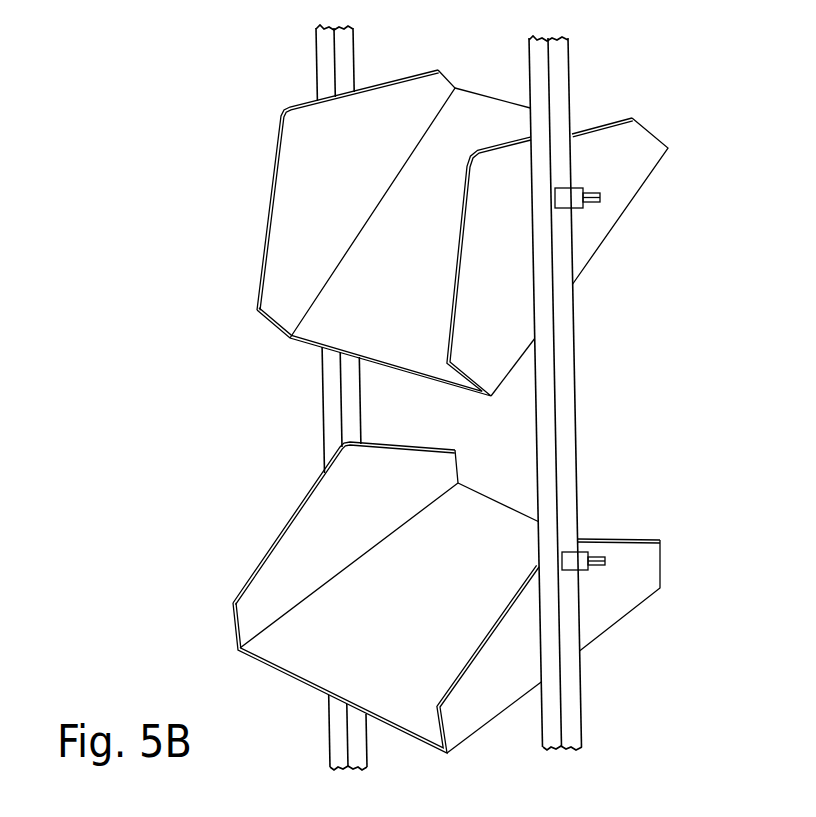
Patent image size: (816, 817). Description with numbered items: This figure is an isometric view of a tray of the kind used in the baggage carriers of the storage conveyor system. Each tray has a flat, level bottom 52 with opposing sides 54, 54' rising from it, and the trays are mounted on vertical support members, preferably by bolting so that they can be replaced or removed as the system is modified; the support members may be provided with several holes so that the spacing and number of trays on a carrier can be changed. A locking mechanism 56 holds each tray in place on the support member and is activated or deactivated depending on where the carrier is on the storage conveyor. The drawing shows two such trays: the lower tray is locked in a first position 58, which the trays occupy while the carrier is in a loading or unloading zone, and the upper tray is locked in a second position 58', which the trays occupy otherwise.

The bottom 52 is at (417, 347).
The side 54 is at (341, 523).
The side 54' is at (593, 646).
The locking mechanism 56 is at (574, 200).
The first position 58 is at (461, 597).
The second position 58' is at (430, 233).